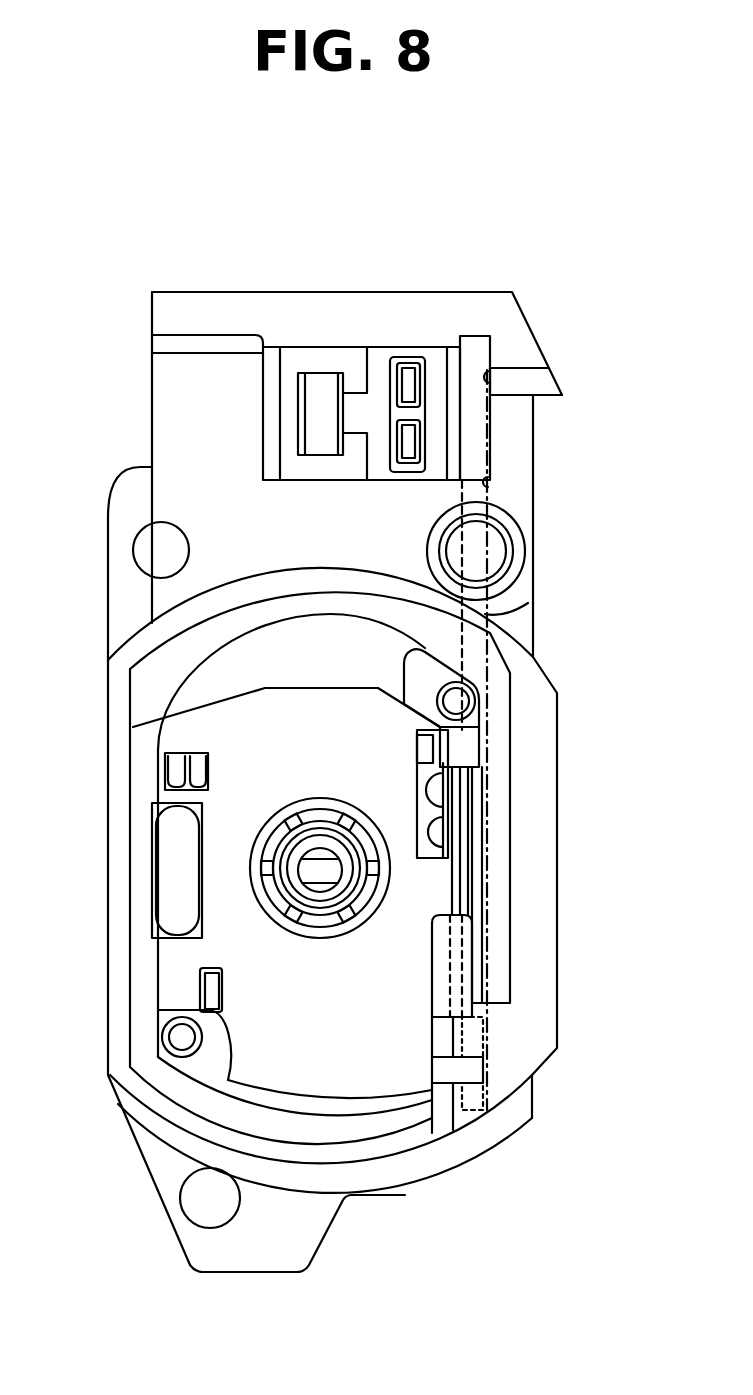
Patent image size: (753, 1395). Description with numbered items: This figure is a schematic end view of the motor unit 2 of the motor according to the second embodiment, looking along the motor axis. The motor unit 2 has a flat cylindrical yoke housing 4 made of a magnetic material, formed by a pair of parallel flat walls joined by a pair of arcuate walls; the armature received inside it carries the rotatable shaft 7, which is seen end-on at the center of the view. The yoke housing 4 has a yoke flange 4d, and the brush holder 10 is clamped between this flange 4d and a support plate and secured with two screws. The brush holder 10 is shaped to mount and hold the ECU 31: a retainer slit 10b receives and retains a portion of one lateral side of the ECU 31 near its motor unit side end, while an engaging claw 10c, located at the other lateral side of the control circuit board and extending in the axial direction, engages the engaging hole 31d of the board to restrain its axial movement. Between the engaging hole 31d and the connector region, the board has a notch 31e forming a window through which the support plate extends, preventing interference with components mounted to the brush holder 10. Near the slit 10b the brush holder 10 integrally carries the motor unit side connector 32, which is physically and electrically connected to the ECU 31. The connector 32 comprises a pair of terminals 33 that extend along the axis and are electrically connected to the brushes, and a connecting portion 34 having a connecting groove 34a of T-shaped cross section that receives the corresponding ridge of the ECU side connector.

The motor unit 2 is at (128, 470).
The yoke housing 4 is at (108, 1094).
The yoke flange 4d is at (308, 1240).
The rotatable shaft 7 is at (323, 870).
The brush holder 10 is at (542, 918).
The retainer slit 10b is at (543, 363).
The engaging claw 10c is at (476, 1067).
The ECU 31 is at (537, 598).
The engaging hole 31d is at (485, 1075).
The notch 31e is at (492, 486).
The motor unit side connector 32 is at (335, 347).
The terminals 33 is at (418, 440).
The connecting portion 34 is at (287, 402).
The connecting groove 34a is at (313, 433).